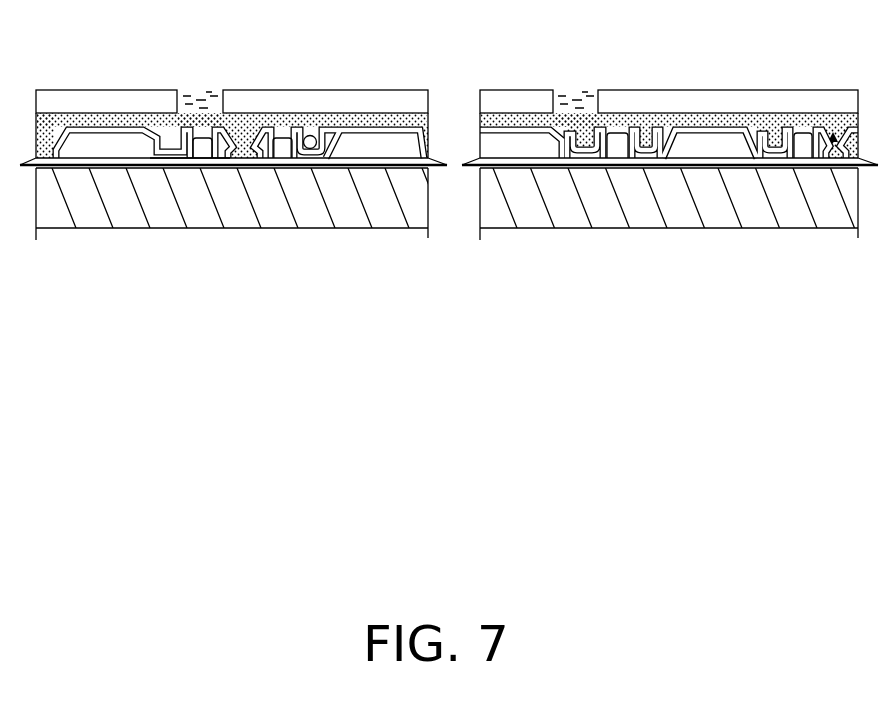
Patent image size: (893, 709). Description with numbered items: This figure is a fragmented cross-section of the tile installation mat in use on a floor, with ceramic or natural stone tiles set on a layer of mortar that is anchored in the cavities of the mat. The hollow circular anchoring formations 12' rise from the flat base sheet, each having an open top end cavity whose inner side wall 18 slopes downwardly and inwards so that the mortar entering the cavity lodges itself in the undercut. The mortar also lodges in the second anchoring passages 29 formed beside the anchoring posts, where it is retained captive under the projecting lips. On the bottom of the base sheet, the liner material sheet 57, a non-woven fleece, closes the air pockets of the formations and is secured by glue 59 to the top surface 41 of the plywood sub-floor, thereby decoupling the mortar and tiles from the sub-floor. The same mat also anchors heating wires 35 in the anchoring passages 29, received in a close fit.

The circular anchoring formation 12' is at (669, 84).
The inner side wall 18 is at (840, 150).
The second anchoring passages 29 is at (642, 137).
The heating wires 35 is at (313, 136).
The top surface of sub-floor 41 is at (635, 161).
The liner material sheet 57 is at (375, 163).
The glue 59 is at (190, 163).